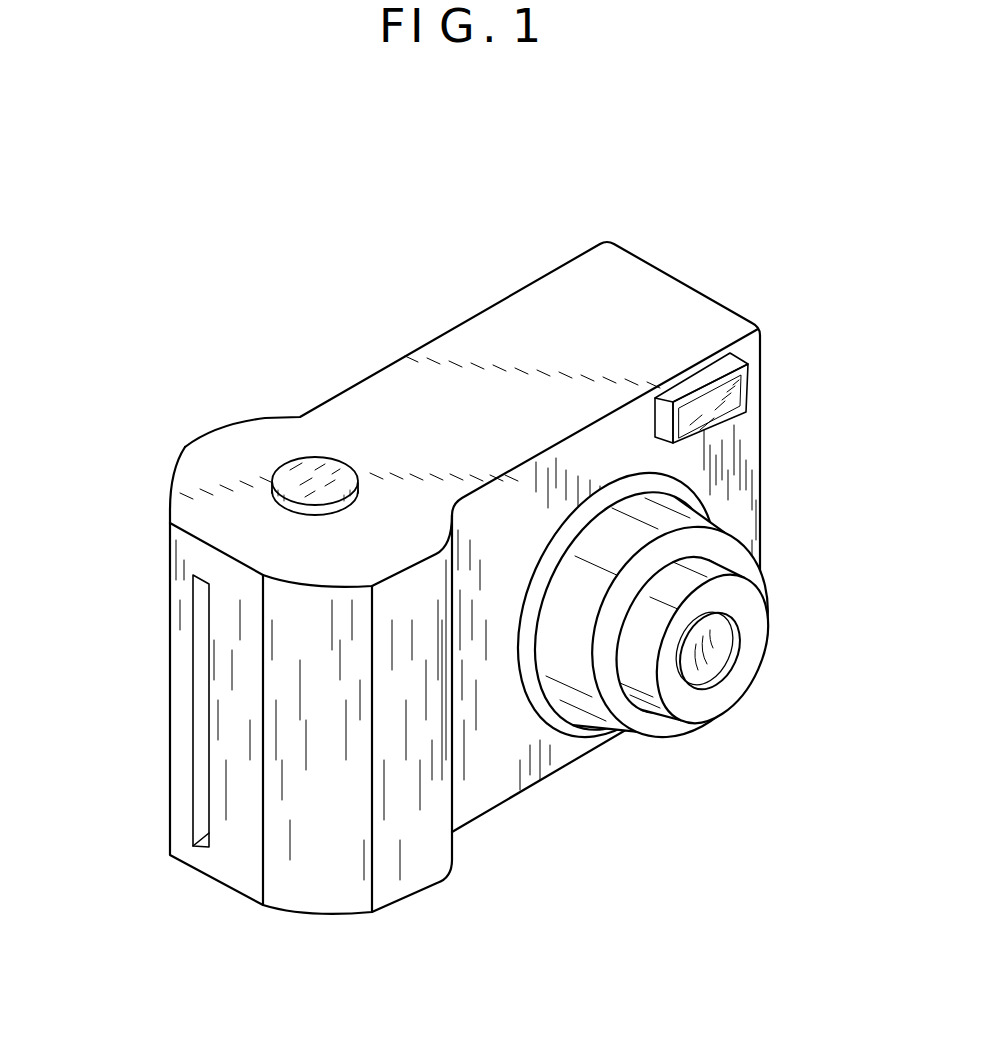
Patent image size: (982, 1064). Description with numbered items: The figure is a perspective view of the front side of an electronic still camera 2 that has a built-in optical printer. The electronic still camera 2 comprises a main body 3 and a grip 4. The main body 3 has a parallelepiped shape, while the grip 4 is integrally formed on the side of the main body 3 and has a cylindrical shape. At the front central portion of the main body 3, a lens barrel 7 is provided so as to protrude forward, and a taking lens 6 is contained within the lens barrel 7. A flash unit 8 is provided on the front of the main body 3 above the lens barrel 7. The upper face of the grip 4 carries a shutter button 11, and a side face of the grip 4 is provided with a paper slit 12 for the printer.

The electronic still camera 2 is at (504, 547).
The main body 3 is at (466, 547).
The grip 4 is at (278, 633).
The taking lens 6 is at (720, 637).
The lens barrel 7 is at (643, 605).
The flash unit 8 is at (737, 390).
The shutter button 11 is at (302, 468).
The paper slit 12 is at (199, 677).